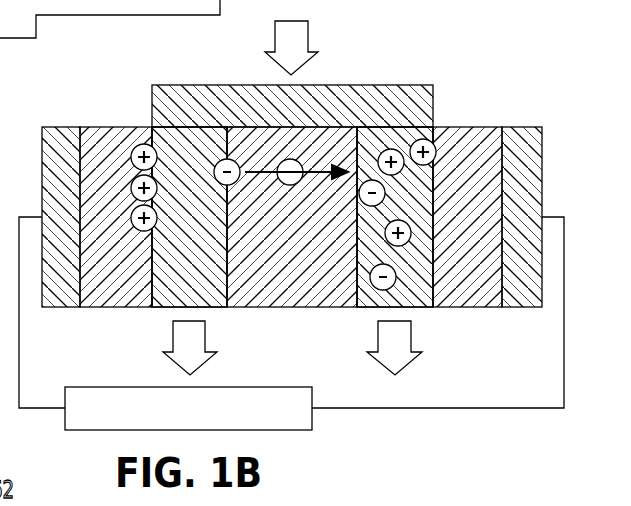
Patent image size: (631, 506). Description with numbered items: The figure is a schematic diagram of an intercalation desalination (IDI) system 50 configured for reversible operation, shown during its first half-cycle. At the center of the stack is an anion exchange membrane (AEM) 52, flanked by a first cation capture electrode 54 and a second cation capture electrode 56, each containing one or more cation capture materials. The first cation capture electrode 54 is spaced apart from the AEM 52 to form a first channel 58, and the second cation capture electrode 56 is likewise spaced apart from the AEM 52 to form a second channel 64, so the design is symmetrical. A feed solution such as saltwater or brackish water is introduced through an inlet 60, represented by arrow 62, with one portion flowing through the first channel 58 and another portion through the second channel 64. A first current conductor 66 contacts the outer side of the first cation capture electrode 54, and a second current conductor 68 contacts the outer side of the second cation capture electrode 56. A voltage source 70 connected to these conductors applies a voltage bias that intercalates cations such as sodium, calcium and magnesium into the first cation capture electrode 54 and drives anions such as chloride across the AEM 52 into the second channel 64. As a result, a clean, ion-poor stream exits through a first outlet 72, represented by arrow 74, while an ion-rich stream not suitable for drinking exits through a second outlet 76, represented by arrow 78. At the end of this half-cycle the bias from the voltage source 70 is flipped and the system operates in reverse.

The IDI system 50 is at (498, 36).
The anion exchange membrane 52 is at (272, 307).
The first cation capture electrode 54 is at (133, 127).
The second cation capture electrode 56 is at (462, 127).
The first channel 58 is at (200, 226).
The inlet 60 is at (257, 85).
The arrow 62 is at (308, 43).
The second channel 64 is at (420, 205).
The first current conductor 66 is at (72, 127).
The second current conductor 68 is at (525, 127).
The voltage source 70 is at (95, 387).
The first outlet 72 is at (209, 307).
The arrow 74 is at (172, 339).
The second outlet 76 is at (424, 307).
The arrow 78 is at (411, 345).